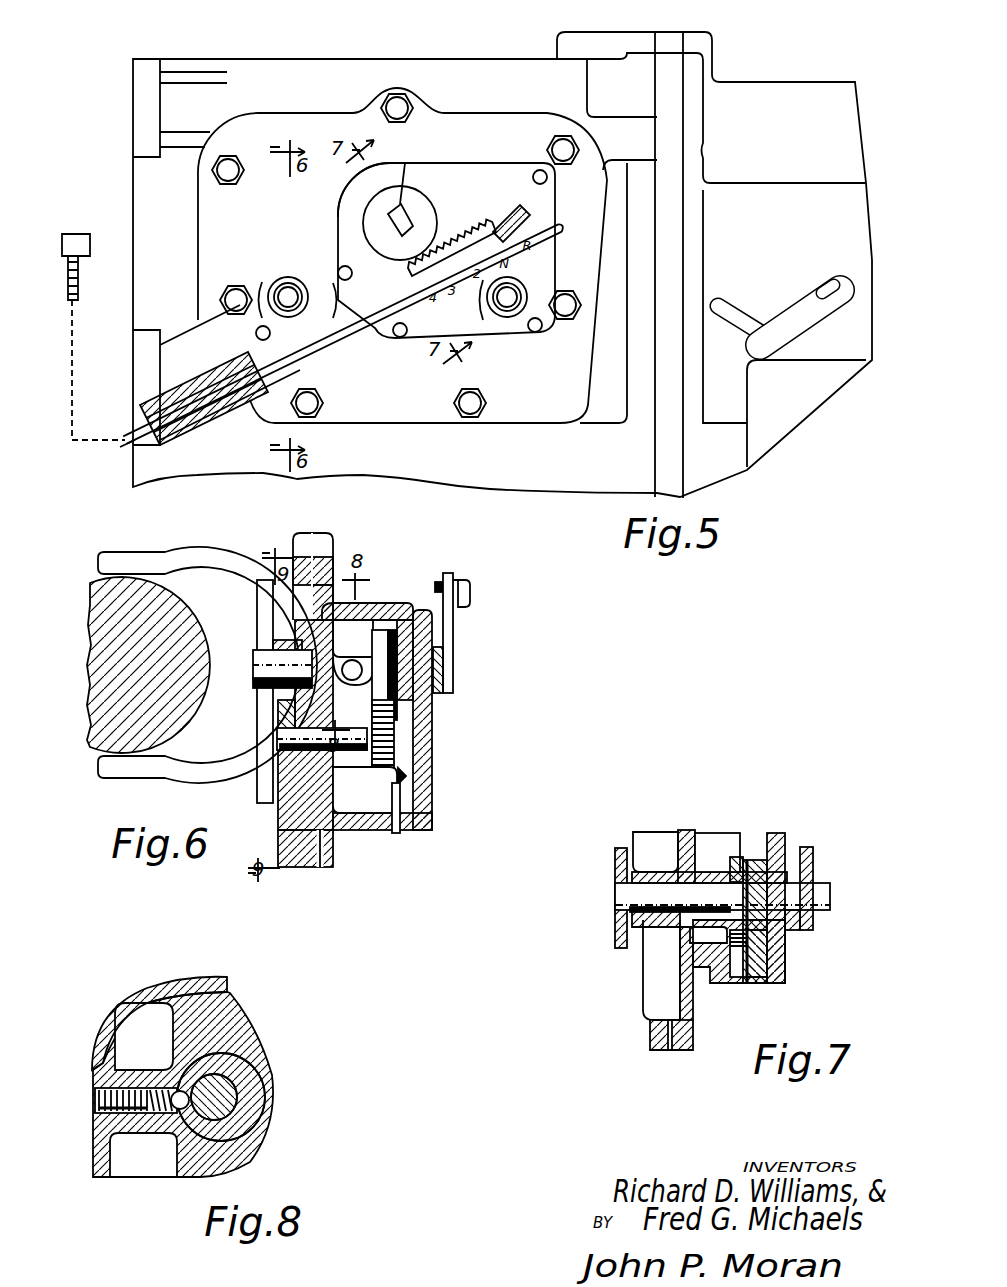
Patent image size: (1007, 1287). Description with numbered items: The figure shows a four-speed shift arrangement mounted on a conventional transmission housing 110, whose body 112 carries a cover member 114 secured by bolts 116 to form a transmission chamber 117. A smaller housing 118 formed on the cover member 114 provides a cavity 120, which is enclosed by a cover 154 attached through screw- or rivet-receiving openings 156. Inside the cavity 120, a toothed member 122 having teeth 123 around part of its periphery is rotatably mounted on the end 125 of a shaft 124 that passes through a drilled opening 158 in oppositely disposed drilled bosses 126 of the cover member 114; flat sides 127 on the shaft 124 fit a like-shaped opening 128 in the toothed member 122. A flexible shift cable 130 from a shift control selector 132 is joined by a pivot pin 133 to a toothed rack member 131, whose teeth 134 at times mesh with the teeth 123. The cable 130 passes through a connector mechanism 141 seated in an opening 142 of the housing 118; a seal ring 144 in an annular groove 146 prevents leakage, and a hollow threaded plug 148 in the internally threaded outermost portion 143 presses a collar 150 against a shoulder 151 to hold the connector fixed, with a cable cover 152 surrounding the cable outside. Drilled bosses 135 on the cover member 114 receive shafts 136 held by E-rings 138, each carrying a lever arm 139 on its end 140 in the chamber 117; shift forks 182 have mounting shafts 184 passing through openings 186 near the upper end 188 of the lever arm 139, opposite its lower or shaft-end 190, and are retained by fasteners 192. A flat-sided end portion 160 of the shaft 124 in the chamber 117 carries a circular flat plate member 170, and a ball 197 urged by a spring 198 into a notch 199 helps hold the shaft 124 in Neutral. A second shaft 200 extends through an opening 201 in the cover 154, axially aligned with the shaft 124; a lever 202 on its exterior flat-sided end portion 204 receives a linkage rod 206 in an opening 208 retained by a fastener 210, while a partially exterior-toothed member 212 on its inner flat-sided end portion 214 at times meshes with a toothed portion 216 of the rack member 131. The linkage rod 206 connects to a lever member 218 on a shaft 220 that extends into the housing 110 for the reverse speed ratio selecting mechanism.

In FIG. 5, the transmission housing 110 is at (244, 45).
In FIG. 6, the transmission housing 110 is at (243, 530).
In FIG. 5, the body 112 is at (368, 72).
In FIG. 6, the body 112 is at (300, 560).
In FIG. 7, the body 112 is at (660, 1053).
In FIG. 5, the cover member 114 is at (312, 128).
In FIG. 6, the cover member 114 is at (320, 870).
In FIG. 7, the cover member 114 is at (690, 1045).
In FIG. 5, the bolts 116 is at (402, 106).
In FIG. 6, the transmission chamber 117 is at (296, 606).
In FIG. 7, the transmission chamber 117 is at (680, 995).
In FIG. 5, the smaller housing 118 is at (468, 165).
In FIG. 6, the smaller housing 118 is at (355, 833).
In FIG. 7, the smaller housing 118 is at (730, 970).
In FIG. 8, the smaller housing 118 is at (175, 985).
In FIG. 5, the cavity 120 is at (545, 240).
In FIG. 6, the cavity 120 is at (400, 612).
In FIG. 7, the cavity 120 is at (690, 830).
In FIG. 8, the cavity 120 is at (135, 1022).
In FIG. 5, the toothed member 122 is at (415, 212).
In FIG. 6, the toothed member 122 is at (380, 632).
In FIG. 7, the toothed member 122 is at (748, 860).
In FIG. 5, the teeth 123 is at (428, 278).
In FIG. 6, the teeth 123 is at (395, 655).
In FIG. 7, the teeth 123 is at (712, 950).
In FIG. 5, the shaft 124 is at (407, 171).
In FIG. 7, the shaft 124 is at (653, 878).
In FIG. 8, the shaft 124 is at (235, 1097).
In FIG. 7, the end 125 is at (717, 851).
In FIG. 6, the drilled bosses 126 is at (351, 660).
In FIG. 7, the drilled bosses 126 is at (708, 936).
In FIG. 8, the drilled bosses 126 is at (217, 1056).
In FIG. 5, the flat sides 127 is at (452, 238).
In FIG. 5, the opening 128 is at (388, 218).
In FIG. 5, the flexible shift cable 130 is at (345, 340).
In FIG. 6, the flexible shift cable 130 is at (394, 818).
In FIG. 5, the toothed rack member 131 is at (440, 248).
In FIG. 6, the toothed rack member 131 is at (395, 765).
In FIG. 7, the toothed rack member 131 is at (762, 960).
In FIG. 5, the shift control selector 132 is at (74, 233).
In FIG. 5, the pivot pin 133 is at (352, 275).
In FIG. 6, the pivot pin 133 is at (410, 776).
In FIG. 5, the teeth 134 is at (495, 215).
In FIG. 6, the teeth 134 is at (400, 746).
In FIG. 5, the drilled bosses 135 is at (308, 297).
In FIG. 6, the drilled bosses 135 is at (322, 800).
In FIG. 5, the shafts 136 is at (282, 277).
In FIG. 6, the shafts 136 is at (306, 768).
In FIG. 5, the E-rings 138 is at (270, 250).
In FIG. 6, the E-rings 138 is at (360, 772).
In FIG. 6, the lever arm 139 is at (285, 705).
In FIG. 6, the end 140 is at (277, 736).
In FIG. 5, the connector mechanism 141 is at (176, 339).
In FIG. 5, the opening 142 is at (238, 320).
In FIG. 5, the internally threaded outermost portion 143 is at (200, 430).
In FIG. 5, the seal ring 144 is at (282, 410).
In FIG. 5, the annular groove 146 is at (275, 376).
In FIG. 5, the hollow externally threaded plug 148 is at (160, 385).
In FIG. 5, the collar 150 is at (204, 372).
In FIG. 5, the shoulder 151 is at (244, 418).
In FIG. 5, the cable cover 152 is at (155, 440).
In FIG. 6, the cover 154 is at (432, 722).
In FIG. 7, the cover 154 is at (780, 845).
In FIG. 5, the screw- or rivet-receiving openings 156 is at (540, 170).
In FIG. 7, the drilled opening 158 is at (695, 876).
In FIG. 7, the flat-sided end portion 160 is at (616, 895).
In FIG. 6, the circular flat plate member 170 is at (262, 580).
In FIG. 7, the circular flat plate member 170 is at (615, 858).
In FIG. 6, the shift forks 182 is at (150, 568).
In FIG. 6, the mounting shaft 184 is at (273, 648).
In FIG. 6, the openings 186 is at (255, 672).
In FIG. 6, the upper end 188 is at (262, 640).
In FIG. 6, the lower or shaft-end 190 is at (280, 760).
In FIG. 6, the fasteners 192 is at (280, 684).
In FIG. 8, the ball 197 is at (180, 1110).
In FIG. 8, the spring 198 is at (155, 1110).
In FIG. 8, the notch 199 is at (180, 1091).
In FIG. 7, the shaft 200 is at (794, 920).
In FIG. 7, the opening 201 is at (790, 886).
In FIG. 6, the lever 202 is at (455, 640).
In FIG. 7, the lever 202 is at (812, 852).
In FIG. 7, the exterior flat-sided end portion 204 is at (795, 900).
In FIG. 5, the linkage rod 206 is at (735, 305).
In FIG. 6, the linkage rod 206 is at (472, 594).
In FIG. 6, the opening 208 is at (466, 578).
In FIG. 6, the fastener 210 is at (440, 580).
In FIG. 6, the partially exterior-toothed member 212 is at (445, 692).
In FIG. 7, the partially exterior-toothed member 212 is at (742, 870).
In FIG. 7, the flat-sided end portion 214 is at (782, 930).
In FIG. 7, the toothed portion 216 is at (768, 955).
In FIG. 5, the lever member 218 is at (808, 318).
In FIG. 5, the shaft 220 is at (826, 282).